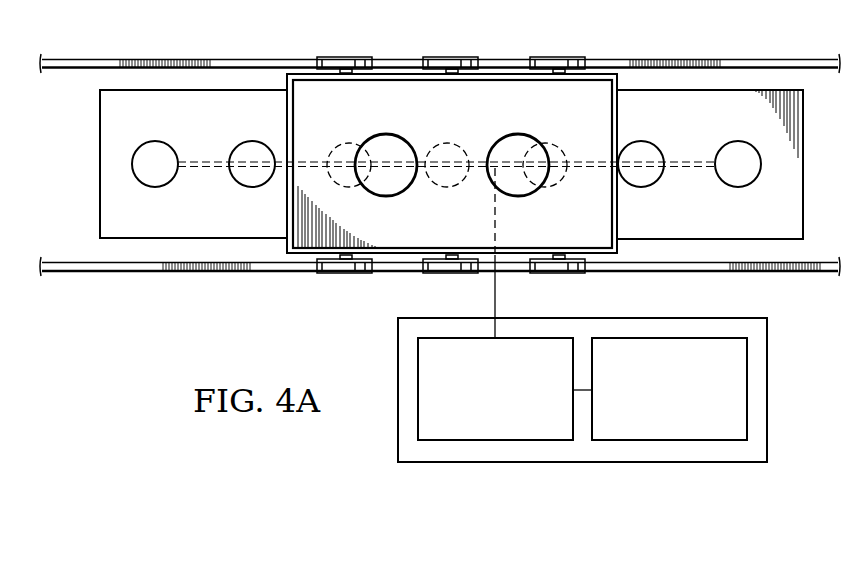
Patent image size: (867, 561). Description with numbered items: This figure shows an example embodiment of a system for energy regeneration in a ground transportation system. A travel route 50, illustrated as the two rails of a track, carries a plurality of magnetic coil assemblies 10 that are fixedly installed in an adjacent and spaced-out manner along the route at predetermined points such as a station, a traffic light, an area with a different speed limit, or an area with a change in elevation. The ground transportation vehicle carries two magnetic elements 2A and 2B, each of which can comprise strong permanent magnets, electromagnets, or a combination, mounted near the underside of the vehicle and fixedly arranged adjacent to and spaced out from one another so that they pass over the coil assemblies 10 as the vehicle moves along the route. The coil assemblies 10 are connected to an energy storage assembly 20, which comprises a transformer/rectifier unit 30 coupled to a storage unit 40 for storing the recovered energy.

The travel route 50 is at (88, 58).
The magnetic coil assembly 10 is at (137, 180).
The magnetic element 2A is at (380, 134).
The magnetic element 2B is at (520, 135).
The energy storage assembly 20 is at (618, 390).
The transformer/rectifier unit 30 is at (508, 402).
The storage unit 40 is at (682, 402).